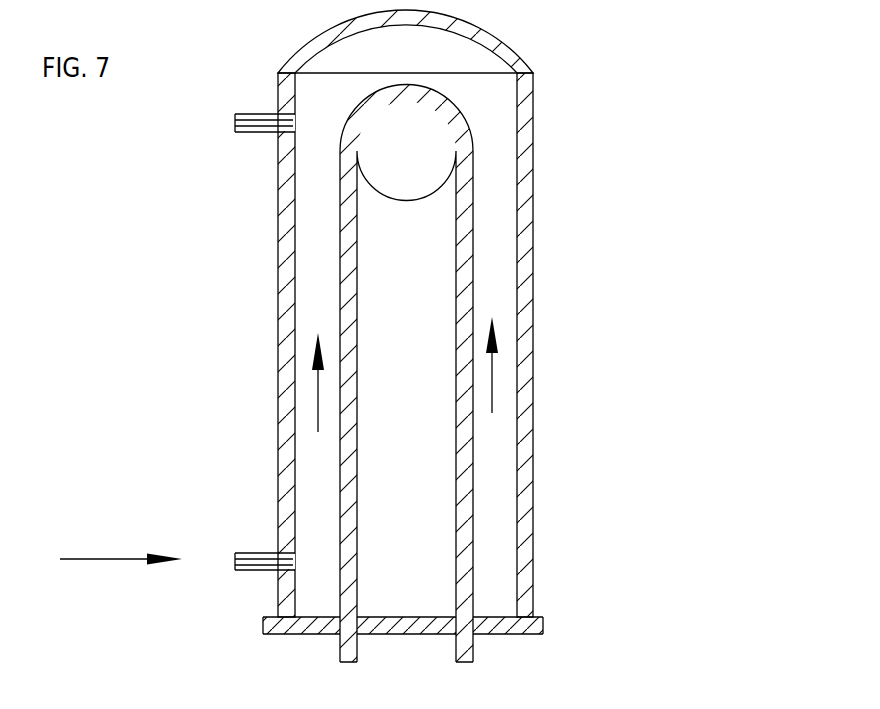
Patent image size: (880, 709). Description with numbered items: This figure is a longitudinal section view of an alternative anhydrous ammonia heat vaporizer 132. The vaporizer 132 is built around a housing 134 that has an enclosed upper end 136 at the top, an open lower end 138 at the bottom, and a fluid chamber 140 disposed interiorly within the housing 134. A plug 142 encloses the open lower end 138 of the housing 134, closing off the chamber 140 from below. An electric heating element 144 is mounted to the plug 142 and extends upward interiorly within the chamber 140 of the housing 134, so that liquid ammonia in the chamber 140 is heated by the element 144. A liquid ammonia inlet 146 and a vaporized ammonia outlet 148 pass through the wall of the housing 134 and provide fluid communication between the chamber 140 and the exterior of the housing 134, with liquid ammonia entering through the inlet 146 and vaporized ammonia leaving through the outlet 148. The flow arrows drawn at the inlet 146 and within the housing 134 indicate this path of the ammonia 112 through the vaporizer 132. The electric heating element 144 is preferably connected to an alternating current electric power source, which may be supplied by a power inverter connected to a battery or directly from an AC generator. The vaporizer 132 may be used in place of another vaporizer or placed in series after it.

The feed stream 112 is at (107, 559).
The anhydrous ammonia heat vaporizer 132 is at (657, 155).
The housing 134 is at (520, 347).
The enclosed upper end 136 is at (455, 32).
The open lower end 138 is at (533, 617).
The fluid chamber 140 is at (418, 334).
The plug 142 is at (490, 625).
The electric heating element 144 is at (462, 498).
The liquid ammonia inlet 146 is at (265, 563).
The vaporized ammonia outlet 148 is at (252, 130).